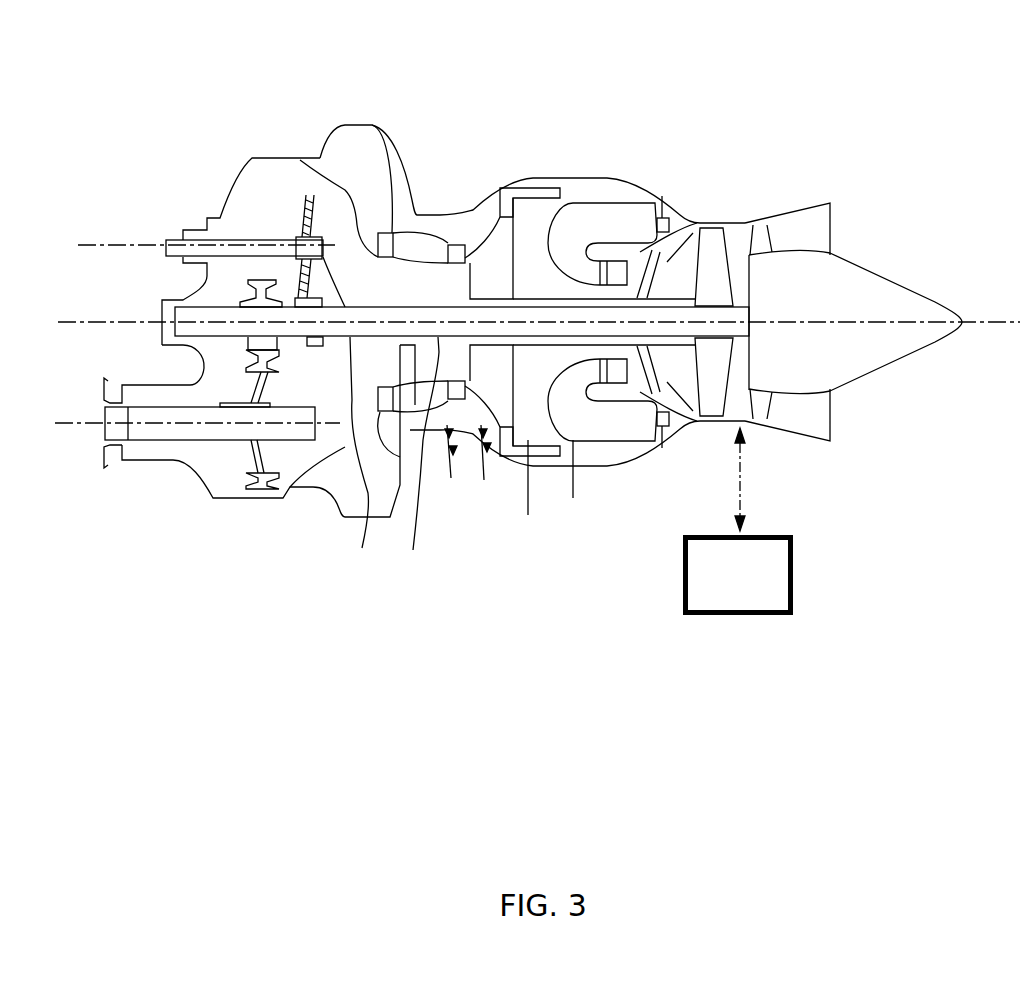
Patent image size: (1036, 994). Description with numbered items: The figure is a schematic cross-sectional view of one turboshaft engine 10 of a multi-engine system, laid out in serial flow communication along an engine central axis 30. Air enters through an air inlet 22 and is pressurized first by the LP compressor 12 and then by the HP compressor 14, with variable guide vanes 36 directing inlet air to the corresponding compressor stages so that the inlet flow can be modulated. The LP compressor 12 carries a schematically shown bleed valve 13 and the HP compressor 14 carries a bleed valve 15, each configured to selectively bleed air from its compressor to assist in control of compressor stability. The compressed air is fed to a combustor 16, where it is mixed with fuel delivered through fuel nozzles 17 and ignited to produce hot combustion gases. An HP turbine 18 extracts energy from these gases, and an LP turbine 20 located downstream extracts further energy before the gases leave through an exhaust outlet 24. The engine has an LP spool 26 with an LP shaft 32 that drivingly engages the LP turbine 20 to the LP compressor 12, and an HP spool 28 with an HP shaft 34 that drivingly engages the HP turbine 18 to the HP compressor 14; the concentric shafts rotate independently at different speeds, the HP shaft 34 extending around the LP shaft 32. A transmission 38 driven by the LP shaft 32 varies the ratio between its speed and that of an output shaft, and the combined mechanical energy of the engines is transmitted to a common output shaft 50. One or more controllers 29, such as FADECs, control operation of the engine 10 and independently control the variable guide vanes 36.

The gas turbine engine 10 is at (812, 133).
The propeller gearbox housing 12 is at (369, 127).
The airflow path 13 is at (443, 467).
The compressor section 14 is at (493, 273).
The airflow path 15 is at (476, 474).
The combustor 16 is at (617, 223).
The turbine stator vane 17 is at (689, 218).
The combustor lower section 18 is at (660, 443).
The turbine rotor 20 is at (709, 225).
The gearbox housing 22 is at (335, 488).
The exhaust nozzle 24 is at (815, 418).
The tower shaft 26 is at (418, 457).
The strut 28 is at (523, 490).
The FADEC controller 29 is at (798, 578).
The engine centerline axis 30 is at (995, 321).
The casing wall 32 is at (355, 457).
The mounting pin 34 is at (567, 481).
The bearing 36 is at (379, 233).
The propeller shaft direction 38 is at (222, 358).
The propeller shaft 50 is at (157, 435).